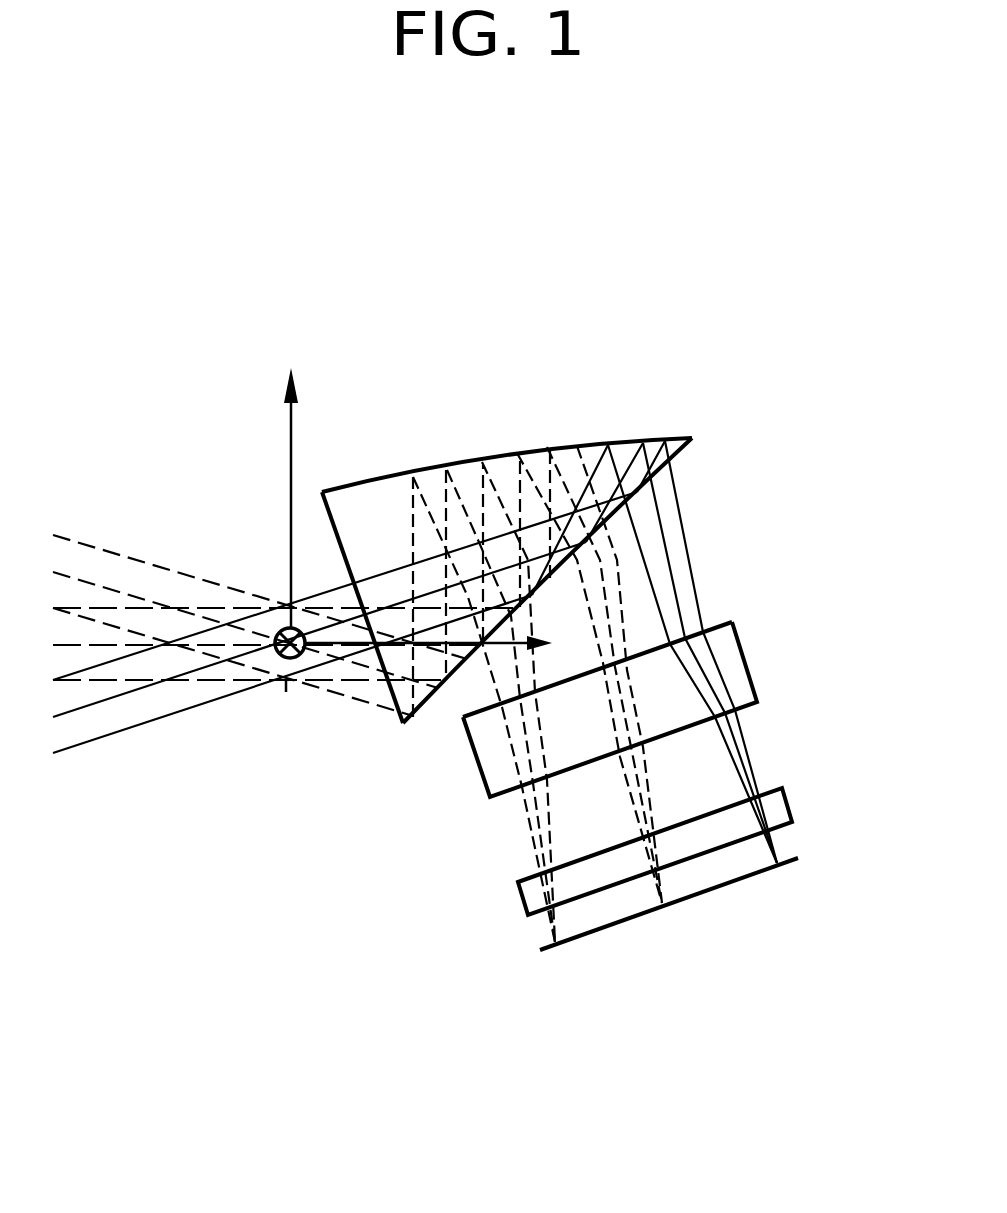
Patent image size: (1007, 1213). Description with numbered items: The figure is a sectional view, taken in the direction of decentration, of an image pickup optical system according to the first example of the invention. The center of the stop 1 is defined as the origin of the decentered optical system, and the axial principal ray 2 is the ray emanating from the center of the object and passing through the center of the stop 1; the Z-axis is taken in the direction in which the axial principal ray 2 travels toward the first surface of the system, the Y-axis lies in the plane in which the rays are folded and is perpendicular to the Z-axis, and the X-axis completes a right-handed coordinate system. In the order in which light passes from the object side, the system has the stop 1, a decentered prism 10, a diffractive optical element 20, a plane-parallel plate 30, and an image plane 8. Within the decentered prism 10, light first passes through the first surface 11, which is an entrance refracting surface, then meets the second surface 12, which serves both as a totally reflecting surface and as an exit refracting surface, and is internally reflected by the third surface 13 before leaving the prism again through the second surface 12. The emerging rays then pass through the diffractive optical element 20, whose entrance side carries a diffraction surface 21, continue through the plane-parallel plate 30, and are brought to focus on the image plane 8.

The stop 1 is at (282, 630).
The axial principal ray 2 is at (333, 647).
The image plane 8 is at (713, 890).
The decentered prism 10 is at (549, 574).
The first surface 11 is at (387, 693).
The second surface 12 is at (643, 485).
The third surface 13 is at (535, 446).
The diffractive optical element 20 is at (666, 670).
The diffraction surface 21 is at (688, 620).
The plane-parallel plate 30 is at (780, 810).